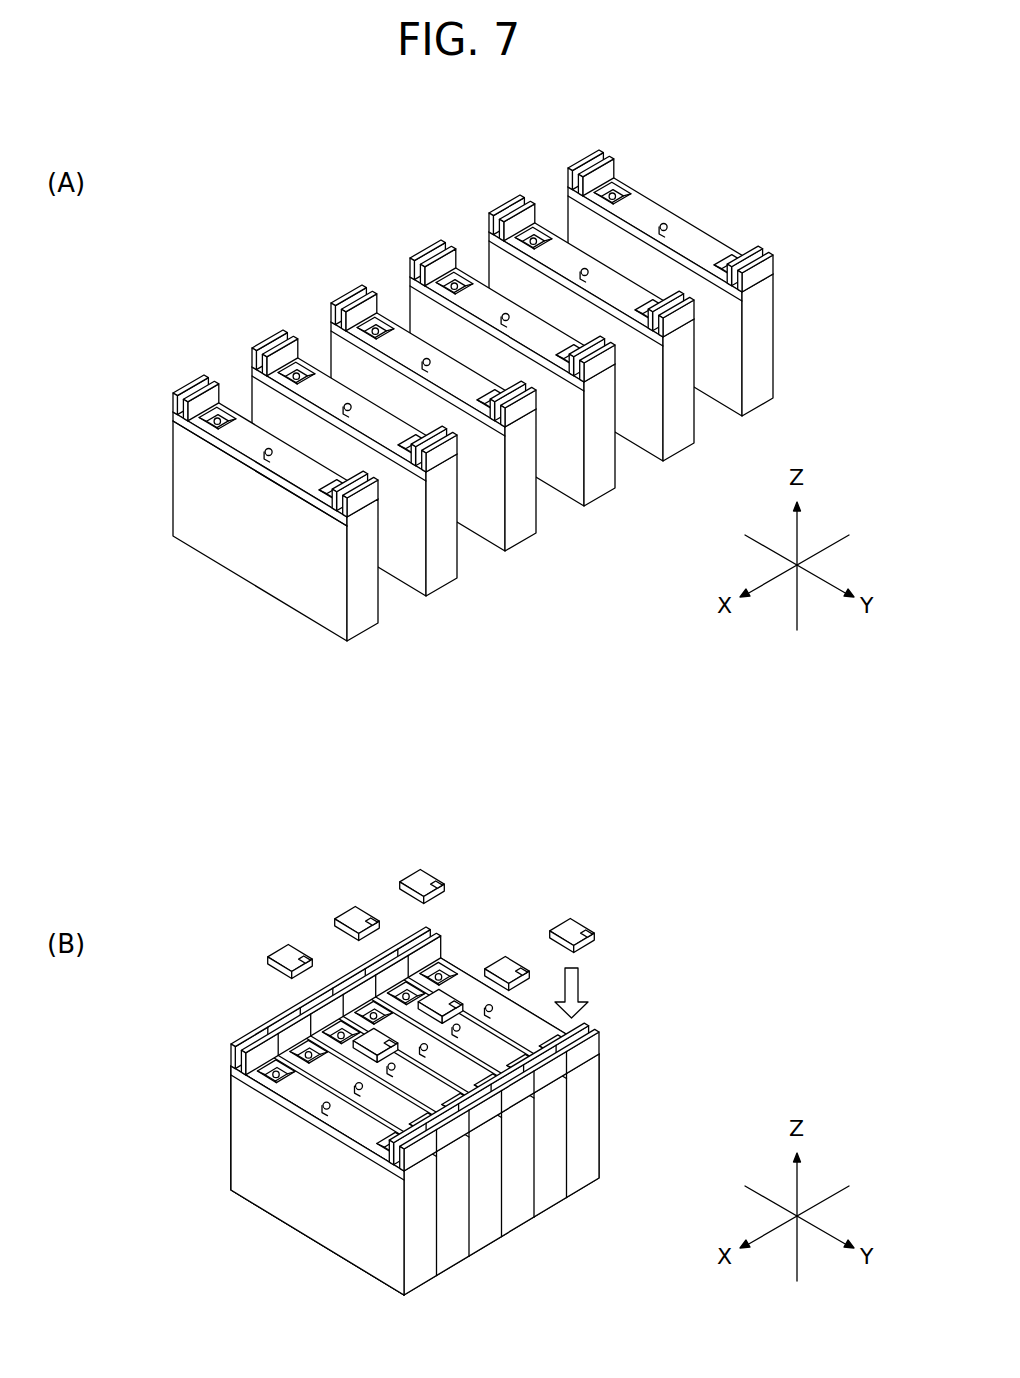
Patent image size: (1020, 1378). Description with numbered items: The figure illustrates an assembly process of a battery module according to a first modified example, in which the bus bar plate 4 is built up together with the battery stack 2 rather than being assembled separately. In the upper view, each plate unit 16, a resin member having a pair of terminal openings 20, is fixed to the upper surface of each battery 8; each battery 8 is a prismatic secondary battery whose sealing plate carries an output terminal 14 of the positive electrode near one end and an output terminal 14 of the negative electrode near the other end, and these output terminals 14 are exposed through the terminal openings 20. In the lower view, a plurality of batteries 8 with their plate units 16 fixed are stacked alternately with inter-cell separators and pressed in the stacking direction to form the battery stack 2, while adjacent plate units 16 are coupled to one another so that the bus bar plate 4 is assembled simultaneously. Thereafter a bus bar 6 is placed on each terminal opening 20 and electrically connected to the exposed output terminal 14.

The battery stack 2 is at (605, 1120).
The bus bar plate 4 is at (603, 1015).
The bus bar 6 is at (578, 918).
The battery 8 is at (244, 583).
The output terminal 14 is at (200, 394).
The plate unit 16 is at (171, 403).
The terminal opening 20 is at (198, 422).